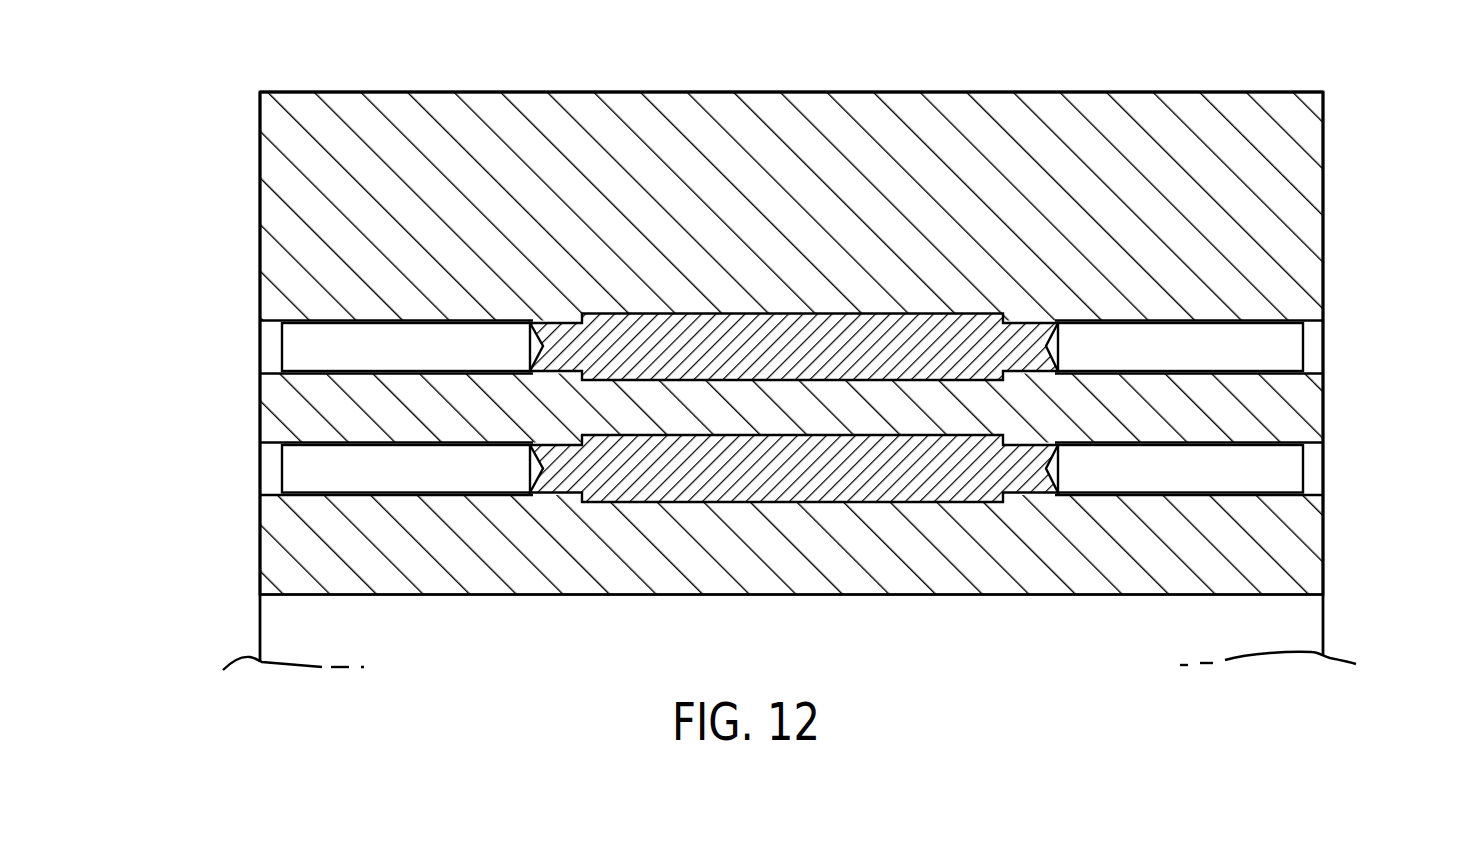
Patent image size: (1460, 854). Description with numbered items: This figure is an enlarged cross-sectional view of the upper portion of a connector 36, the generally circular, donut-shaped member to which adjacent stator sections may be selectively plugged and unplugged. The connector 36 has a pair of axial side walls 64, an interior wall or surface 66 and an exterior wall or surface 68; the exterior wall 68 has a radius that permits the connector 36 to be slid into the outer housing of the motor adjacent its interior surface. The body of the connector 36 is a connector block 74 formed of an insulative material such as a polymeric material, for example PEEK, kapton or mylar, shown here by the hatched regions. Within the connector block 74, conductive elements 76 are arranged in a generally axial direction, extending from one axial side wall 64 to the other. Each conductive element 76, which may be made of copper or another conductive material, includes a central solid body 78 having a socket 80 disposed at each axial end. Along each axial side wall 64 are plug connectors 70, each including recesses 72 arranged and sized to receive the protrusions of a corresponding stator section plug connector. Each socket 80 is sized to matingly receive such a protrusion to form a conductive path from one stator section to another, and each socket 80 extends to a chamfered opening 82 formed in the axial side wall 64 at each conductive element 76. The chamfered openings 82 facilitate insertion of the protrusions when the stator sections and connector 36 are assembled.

The connector 36 is at (857, 83).
The axial side walls 64 is at (260, 203).
The interior wall 66 is at (310, 640).
The exterior wall 68 is at (615, 91).
The plug connectors 70 is at (183, 392).
The recesses 72 is at (220, 346).
The connector block 74 is at (1296, 151).
The conductive elements 76 is at (919, 458).
The central solid body 78 is at (720, 362).
The socket 80 is at (312, 371).
The chamfered opening 82 is at (280, 328).